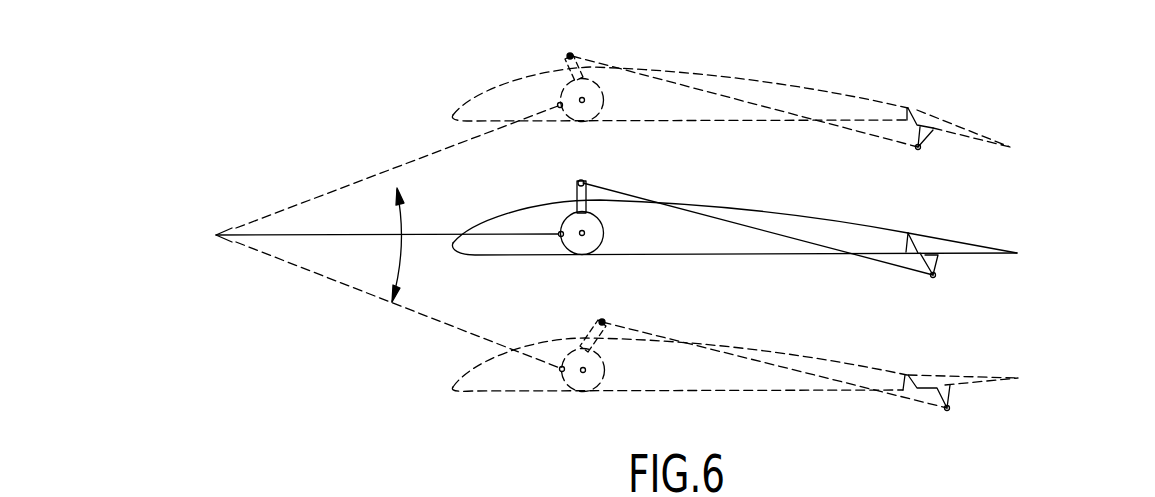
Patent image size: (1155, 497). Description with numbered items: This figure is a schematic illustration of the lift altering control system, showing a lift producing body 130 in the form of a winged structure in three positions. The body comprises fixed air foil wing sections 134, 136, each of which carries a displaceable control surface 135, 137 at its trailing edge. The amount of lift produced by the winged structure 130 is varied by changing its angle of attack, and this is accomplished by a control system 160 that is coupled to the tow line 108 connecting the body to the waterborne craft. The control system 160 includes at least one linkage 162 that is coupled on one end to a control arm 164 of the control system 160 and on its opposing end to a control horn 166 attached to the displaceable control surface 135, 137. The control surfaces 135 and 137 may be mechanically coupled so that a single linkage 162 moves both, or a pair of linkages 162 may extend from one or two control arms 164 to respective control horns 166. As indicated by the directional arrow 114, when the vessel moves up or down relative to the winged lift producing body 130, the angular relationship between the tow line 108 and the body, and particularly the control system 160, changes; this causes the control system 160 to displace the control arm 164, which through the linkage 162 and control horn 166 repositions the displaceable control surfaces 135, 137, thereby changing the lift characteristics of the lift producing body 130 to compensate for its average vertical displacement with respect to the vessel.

The tow line 108 is at (343, 183).
The directional arrow 114 is at (405, 252).
The lift producing body 130 is at (732, 220).
The fixed air foil wing section 134 is at (697, 231).
The fixed air foil wing section 136 is at (486, 90).
The displaceable control surface 135 is at (996, 214).
The displaceable control surface 137 is at (993, 250).
The control system 160 is at (563, 212).
The linkage 162 is at (702, 210).
The control arm 164 is at (582, 179).
The control horn 166 is at (935, 260).